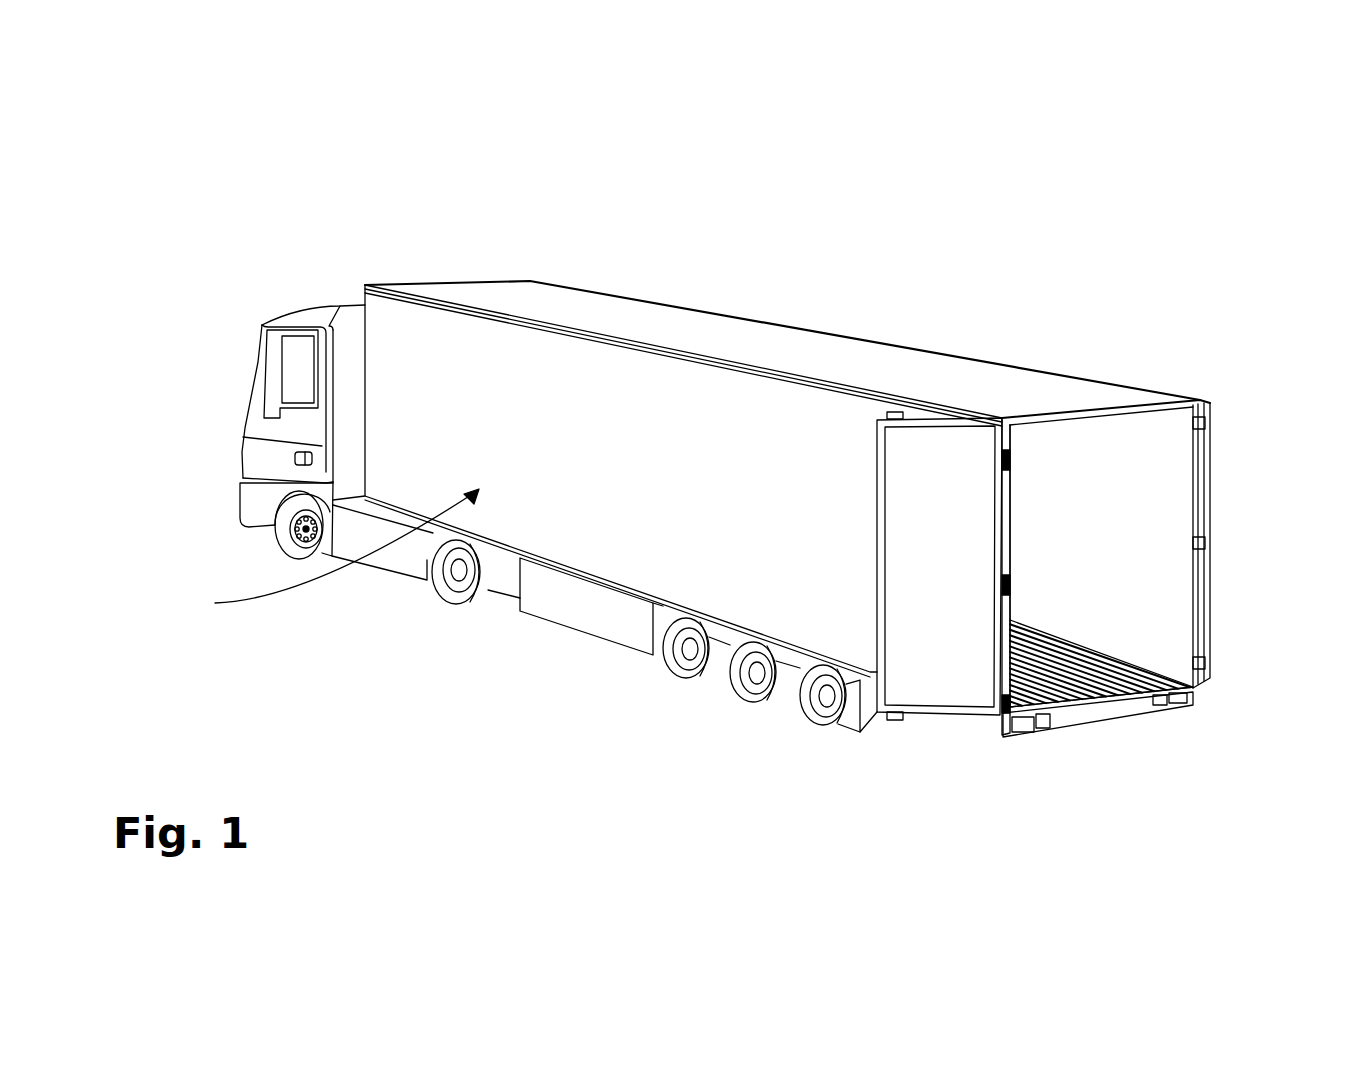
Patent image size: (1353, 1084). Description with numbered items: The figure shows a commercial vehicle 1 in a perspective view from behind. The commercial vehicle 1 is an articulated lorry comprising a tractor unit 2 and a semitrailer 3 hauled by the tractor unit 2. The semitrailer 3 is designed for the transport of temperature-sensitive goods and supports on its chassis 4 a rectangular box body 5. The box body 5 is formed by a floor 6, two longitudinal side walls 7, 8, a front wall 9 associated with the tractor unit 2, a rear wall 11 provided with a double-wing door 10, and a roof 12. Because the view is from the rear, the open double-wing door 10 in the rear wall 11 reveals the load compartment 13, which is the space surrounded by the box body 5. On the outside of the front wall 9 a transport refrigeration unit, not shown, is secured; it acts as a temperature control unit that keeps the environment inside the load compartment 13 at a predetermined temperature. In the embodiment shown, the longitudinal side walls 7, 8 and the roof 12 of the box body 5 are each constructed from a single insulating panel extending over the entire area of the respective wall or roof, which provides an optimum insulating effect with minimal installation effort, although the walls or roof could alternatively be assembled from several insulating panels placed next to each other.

The commercial vehicle 1 is at (506, 232).
The tractor unit 2 is at (325, 308).
The semitrailer 3 is at (334, 549).
The chassis 4 is at (628, 595).
The box body 5 is at (668, 313).
The floor 6 is at (1153, 688).
The longitudinal side wall 7 is at (793, 545).
The longitudinal side wall 8 is at (1130, 485).
The front wall 9 is at (400, 279).
The double-wing door 10 is at (942, 673).
The rear wall 11 is at (1200, 398).
The roof 12 is at (903, 370).
The load compartment 13 is at (1091, 572).